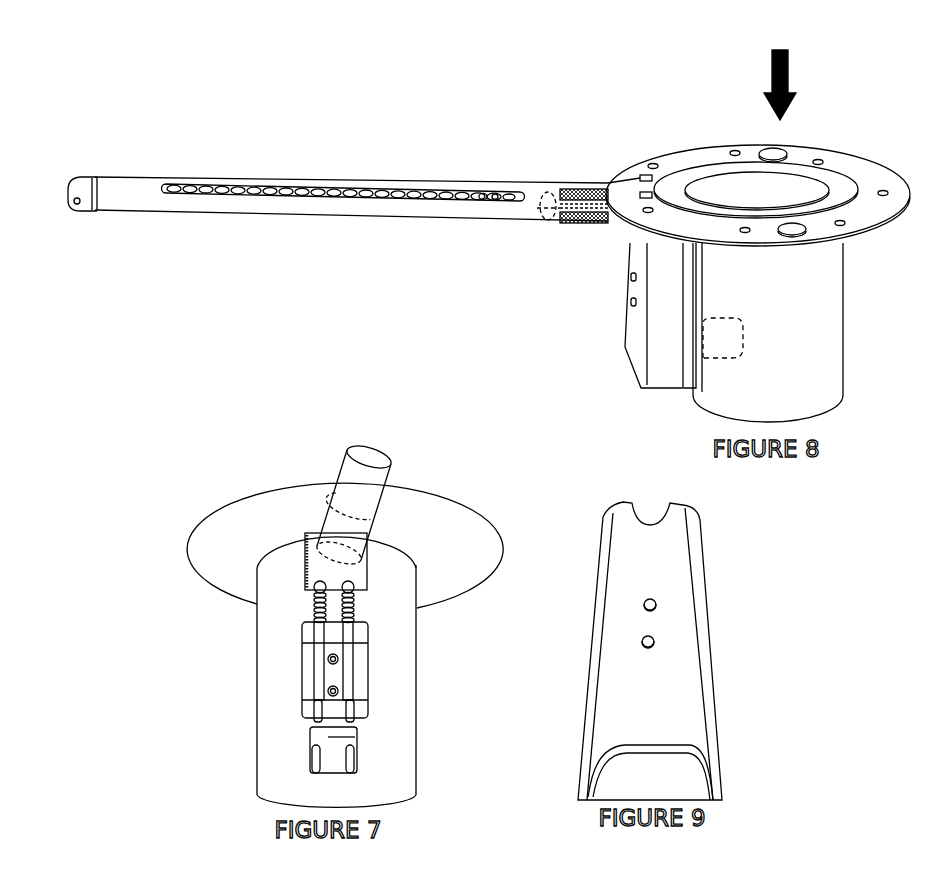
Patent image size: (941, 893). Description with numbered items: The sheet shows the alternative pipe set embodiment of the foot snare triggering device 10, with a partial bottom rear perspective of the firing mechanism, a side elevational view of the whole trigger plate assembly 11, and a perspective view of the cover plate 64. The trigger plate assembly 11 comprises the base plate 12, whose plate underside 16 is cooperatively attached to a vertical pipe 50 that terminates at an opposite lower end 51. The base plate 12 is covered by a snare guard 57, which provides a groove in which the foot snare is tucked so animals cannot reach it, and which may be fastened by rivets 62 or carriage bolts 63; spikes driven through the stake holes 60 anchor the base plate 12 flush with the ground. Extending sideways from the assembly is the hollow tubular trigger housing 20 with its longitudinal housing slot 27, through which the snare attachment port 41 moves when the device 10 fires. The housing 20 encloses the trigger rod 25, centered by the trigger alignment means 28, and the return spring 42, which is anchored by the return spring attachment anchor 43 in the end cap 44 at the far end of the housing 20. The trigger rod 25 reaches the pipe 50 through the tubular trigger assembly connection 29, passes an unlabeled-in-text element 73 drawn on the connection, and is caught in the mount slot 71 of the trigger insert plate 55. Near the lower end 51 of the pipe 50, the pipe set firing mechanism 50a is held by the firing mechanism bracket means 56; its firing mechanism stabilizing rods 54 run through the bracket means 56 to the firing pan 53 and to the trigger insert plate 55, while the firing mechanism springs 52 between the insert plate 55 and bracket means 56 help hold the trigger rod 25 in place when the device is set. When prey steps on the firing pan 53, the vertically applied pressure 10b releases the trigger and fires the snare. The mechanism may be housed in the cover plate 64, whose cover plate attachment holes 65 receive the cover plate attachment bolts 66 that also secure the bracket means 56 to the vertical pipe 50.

In FIG. 8, the foot snare triggering device 10 is at (485, 98).
In FIG. 8, the vertically applied pressure 10b is at (764, 70).
In FIG. 8, the trigger plate assembly 11 is at (822, 138).
In FIG. 7, the trigger plate assembly 11 is at (318, 540).
In FIG. 8, the base plate 12 is at (618, 185).
In FIG. 7, the base plate 12 is at (240, 481).
In FIG. 7, the plate underside 16 is at (192, 543).
In FIG. 8, the trigger housing 20 is at (129, 200).
In FIG. 8, the trigger rod 25 is at (527, 210).
In FIG. 8, the housing slot 27 is at (249, 204).
In FIG. 8, the trigger alignment means 28 is at (483, 203).
In FIG. 8, the trigger assembly connection 29 is at (548, 222).
In FIG. 7, the trigger assembly connection 29 is at (362, 479).
In FIG. 8, the snare attachment port 41 is at (495, 203).
In FIG. 8, the return spring 42 is at (314, 188).
In FIG. 8, the return spring attachment anchor 43 is at (77, 205).
In FIG. 8, the end cap 44 is at (82, 186).
In FIG. 8, the vertical pipe 50 is at (818, 338).
In FIG. 7, the vertical pipe 50 is at (256, 747).
In FIG. 7, the pipe set firing mechanism 50a is at (273, 709).
In FIG. 7, the lower end 51 is at (262, 801).
In FIG. 7, the firing mechanism springs 52 is at (344, 596).
In FIG. 8, the firing pan 53 is at (705, 340).
In FIG. 7, the firing pan 53 is at (330, 738).
In FIG. 7, the firing mechanism stabilizing rods 54 is at (319, 777).
In FIG. 7, the trigger insert plate 55 is at (358, 564).
In FIG. 7, the firing mechanism bracket means 56 is at (308, 670).
In FIG. 8, the snare guard 57 is at (872, 179).
In FIG. 8, the stake holes 60 is at (774, 150).
In FIG. 8, the rivets 62 is at (738, 150).
In FIG. 8, the carriage bolts 63 is at (645, 193).
In FIG. 8, the cover plate 64 is at (630, 356).
In FIG. 9, the cover plate 64 is at (655, 575).
In FIG. 9, the cover plate attachment holes 65 is at (657, 607).
In FIG. 8, the cover plate attachment bolts 66 is at (630, 301).
In FIG. 7, the cover plate attachment bolts 66 is at (340, 660).
In FIG. 7, the mount slot 71 is at (333, 547).
In FIG. 8, the threaded portion 73 is at (583, 224).
In FIG. 7, the threaded portion 73 is at (347, 517).